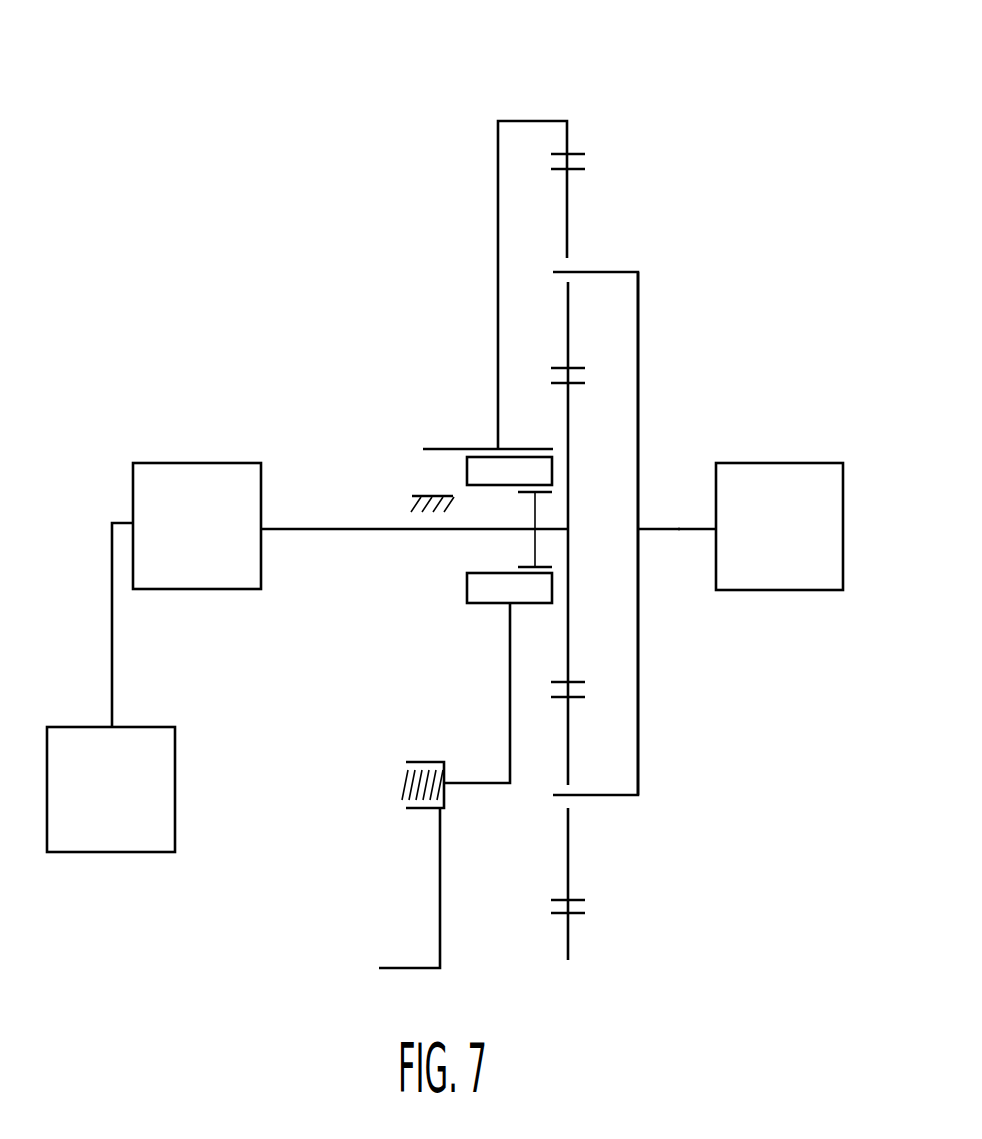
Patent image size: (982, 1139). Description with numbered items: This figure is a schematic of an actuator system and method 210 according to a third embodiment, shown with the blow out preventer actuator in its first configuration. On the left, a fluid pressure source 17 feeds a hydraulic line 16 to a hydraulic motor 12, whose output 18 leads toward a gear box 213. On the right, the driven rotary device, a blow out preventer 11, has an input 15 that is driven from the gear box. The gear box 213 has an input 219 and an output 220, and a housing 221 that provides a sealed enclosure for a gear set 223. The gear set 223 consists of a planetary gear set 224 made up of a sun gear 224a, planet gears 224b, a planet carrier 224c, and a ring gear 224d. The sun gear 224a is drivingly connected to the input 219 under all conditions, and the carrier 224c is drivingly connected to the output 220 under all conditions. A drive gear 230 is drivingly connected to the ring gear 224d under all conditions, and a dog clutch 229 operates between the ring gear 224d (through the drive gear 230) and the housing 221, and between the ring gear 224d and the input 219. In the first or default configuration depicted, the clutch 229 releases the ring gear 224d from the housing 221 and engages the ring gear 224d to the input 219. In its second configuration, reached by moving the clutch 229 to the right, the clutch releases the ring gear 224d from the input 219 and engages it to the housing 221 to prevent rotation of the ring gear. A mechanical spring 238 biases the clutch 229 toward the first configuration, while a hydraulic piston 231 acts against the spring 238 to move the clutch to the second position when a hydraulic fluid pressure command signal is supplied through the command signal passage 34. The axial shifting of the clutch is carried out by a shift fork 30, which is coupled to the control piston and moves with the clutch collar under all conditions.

The blow out preventer 11 is at (815, 462).
The hydraulic motor 12 is at (200, 462).
The input 15 is at (698, 527).
The hydraulic line 16 is at (112, 669).
The fluid pressure source 17 is at (175, 800).
The output 18 is at (293, 527).
The shift fork 30 is at (510, 632).
The command signal passage 34 is at (440, 898).
The actuator system and method 210 is at (790, 220).
The gear box 213 is at (548, 108).
The input 219 is at (517, 527).
The output 220 is at (653, 527).
The housing 221 is at (410, 510).
The gear set 223 is at (590, 245).
The planetary gear set 224 is at (580, 400).
The sun gear 224a is at (568, 655).
The planet gears 224b is at (578, 170).
The planet carrier 224c is at (638, 325).
The ring gear 224d is at (578, 152).
The dog clutch 229 is at (467, 583).
The drive gear 230 is at (444, 448).
The hydraulic piston 231 is at (444, 780).
The mechanical spring 238 is at (415, 765).